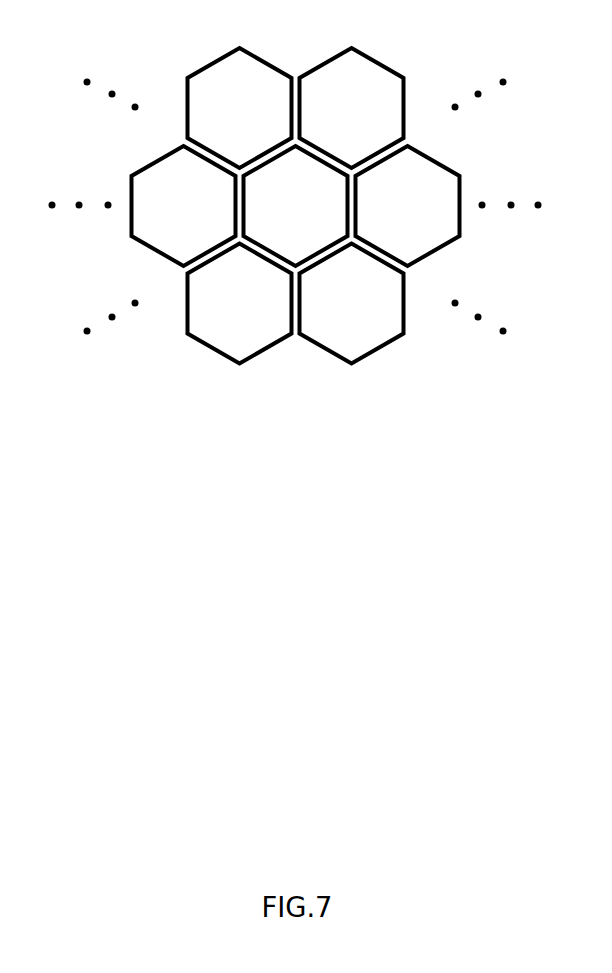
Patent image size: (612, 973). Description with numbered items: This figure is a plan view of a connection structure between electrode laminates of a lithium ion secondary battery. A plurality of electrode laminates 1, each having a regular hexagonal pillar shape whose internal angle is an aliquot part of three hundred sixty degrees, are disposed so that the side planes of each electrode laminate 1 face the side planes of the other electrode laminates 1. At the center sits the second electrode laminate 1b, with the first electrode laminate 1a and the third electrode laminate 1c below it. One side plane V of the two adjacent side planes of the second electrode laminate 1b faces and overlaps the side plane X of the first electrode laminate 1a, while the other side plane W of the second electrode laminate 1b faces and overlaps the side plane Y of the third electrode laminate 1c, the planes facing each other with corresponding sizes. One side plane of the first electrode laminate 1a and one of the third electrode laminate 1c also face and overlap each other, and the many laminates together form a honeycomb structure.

The electrode laminate 1 is at (218, 72).
The first electrode laminate 1a is at (217, 336).
The second electrode laminate 1b is at (330, 208).
The third electrode laminate 1c is at (373, 336).
The side plane V is at (261, 242).
The side plane W is at (329, 242).
The side plane X is at (268, 252).
The side plane Y is at (315, 250).